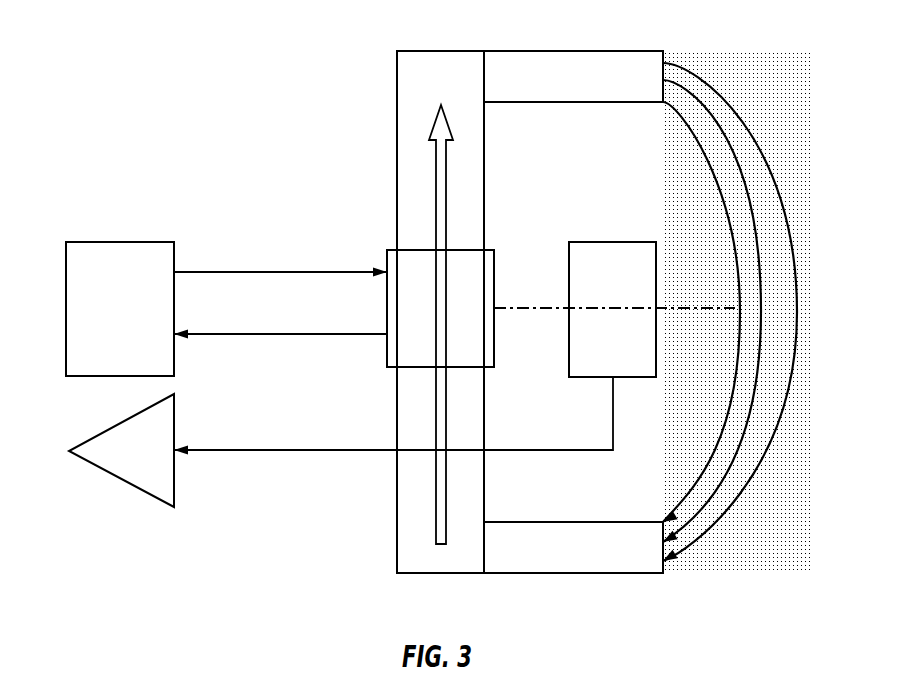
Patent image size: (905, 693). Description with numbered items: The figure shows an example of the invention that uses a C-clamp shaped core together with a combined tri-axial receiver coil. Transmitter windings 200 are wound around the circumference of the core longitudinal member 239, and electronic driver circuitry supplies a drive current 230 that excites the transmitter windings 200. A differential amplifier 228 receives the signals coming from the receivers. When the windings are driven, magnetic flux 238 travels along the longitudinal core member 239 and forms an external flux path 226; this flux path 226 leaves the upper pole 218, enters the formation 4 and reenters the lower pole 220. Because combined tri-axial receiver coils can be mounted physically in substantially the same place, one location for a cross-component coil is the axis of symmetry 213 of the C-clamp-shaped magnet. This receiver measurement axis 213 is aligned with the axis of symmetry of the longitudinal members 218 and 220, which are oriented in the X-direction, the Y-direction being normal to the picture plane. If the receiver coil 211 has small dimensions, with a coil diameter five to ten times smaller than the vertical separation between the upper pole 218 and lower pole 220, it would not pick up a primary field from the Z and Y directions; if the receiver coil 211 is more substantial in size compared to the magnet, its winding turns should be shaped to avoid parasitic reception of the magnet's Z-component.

The formation 4 is at (796, 93).
The transmitter windings 200 is at (492, 368).
The receiver coil 211 is at (607, 242).
The axis of symmetry 213 is at (728, 308).
The upper pole 218 is at (584, 50).
The lower pole 220 is at (603, 574).
The external flux path 226 is at (94, 242).
The differential amplifier 228 is at (97, 436).
The drive current 230 is at (241, 272).
The magnetic flux 238 is at (438, 198).
The core longitudinal member 239 is at (397, 543).